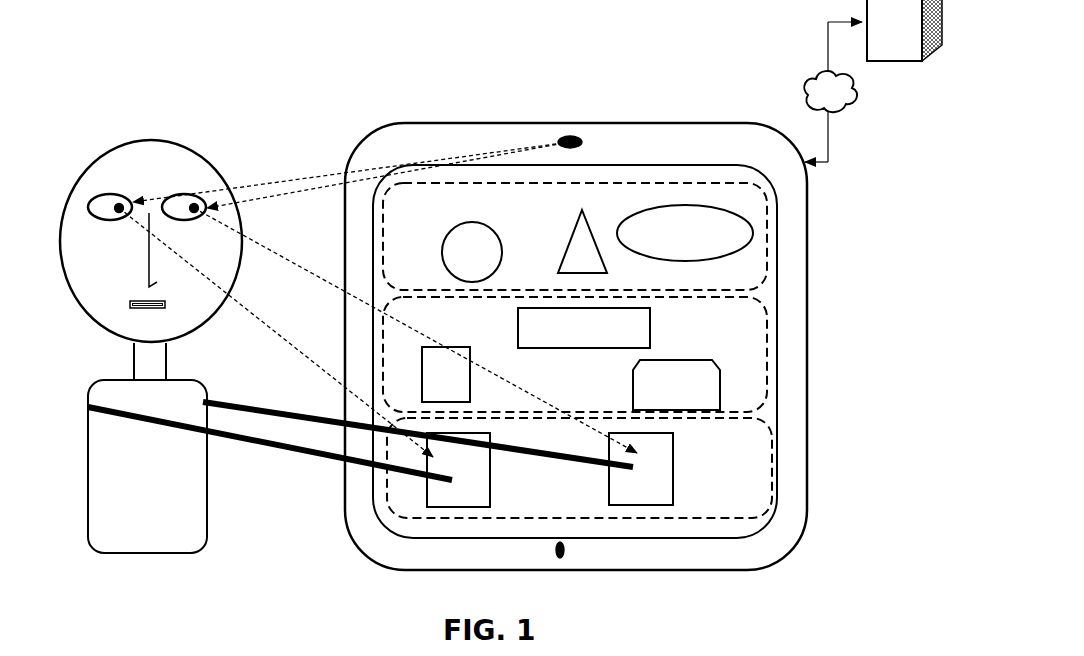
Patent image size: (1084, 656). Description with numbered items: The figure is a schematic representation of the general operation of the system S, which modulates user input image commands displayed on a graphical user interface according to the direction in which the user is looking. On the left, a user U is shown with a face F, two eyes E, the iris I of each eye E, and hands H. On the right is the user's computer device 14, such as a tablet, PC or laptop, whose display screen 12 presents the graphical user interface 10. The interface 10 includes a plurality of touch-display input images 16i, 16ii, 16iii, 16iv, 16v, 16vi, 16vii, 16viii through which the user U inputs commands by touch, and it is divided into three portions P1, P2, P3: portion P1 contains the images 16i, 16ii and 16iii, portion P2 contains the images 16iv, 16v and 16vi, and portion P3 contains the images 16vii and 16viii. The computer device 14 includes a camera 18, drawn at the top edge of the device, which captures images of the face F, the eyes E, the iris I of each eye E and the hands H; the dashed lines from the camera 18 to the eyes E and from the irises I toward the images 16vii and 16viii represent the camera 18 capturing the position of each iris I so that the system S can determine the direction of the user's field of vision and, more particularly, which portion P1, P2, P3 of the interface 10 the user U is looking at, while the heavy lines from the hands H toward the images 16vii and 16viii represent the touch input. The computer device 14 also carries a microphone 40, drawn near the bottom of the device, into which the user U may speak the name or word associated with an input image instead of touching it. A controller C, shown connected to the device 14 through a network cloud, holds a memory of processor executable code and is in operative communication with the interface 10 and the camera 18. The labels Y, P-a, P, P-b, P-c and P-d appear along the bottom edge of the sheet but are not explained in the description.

The system S is at (240, 88).
The user U is at (93, 130).
The eyes E is at (95, 206).
The iris I is at (116, 209).
The face F is at (93, 268).
The computer device 14 is at (717, 148).
The camera 18 is at (568, 137).
The graphical user interface 10 is at (627, 304).
The display screen 12 is at (770, 392).
The first portion of the interface P1 is at (615, 186).
The second portion of the interface P2 is at (770, 348).
The third portion of the interface P3 is at (755, 478).
The touch-display input image 16i is at (458, 271).
The touch-display input image 16ii is at (566, 272).
The touch-display input image 16iii is at (663, 244).
The touch-display input image 16iv is at (563, 338).
The touch-display input image 16v is at (429, 390).
The touch-display input image 16vi is at (655, 394).
The touch-display input image 16vii is at (438, 499).
The touch-display input image 16viii is at (616, 494).
The microphone 40 is at (566, 556).
The hands H is at (600, 469).
The controller C is at (902, 40).
The Y axis Y is at (147, 655).
The screen portion a P-a is at (220, 655).
The screen portion P is at (290, 648).
The screen portion b P-b is at (367, 655).
The screen portion c P-c is at (596, 655).
The screen portion d P-d is at (762, 655).